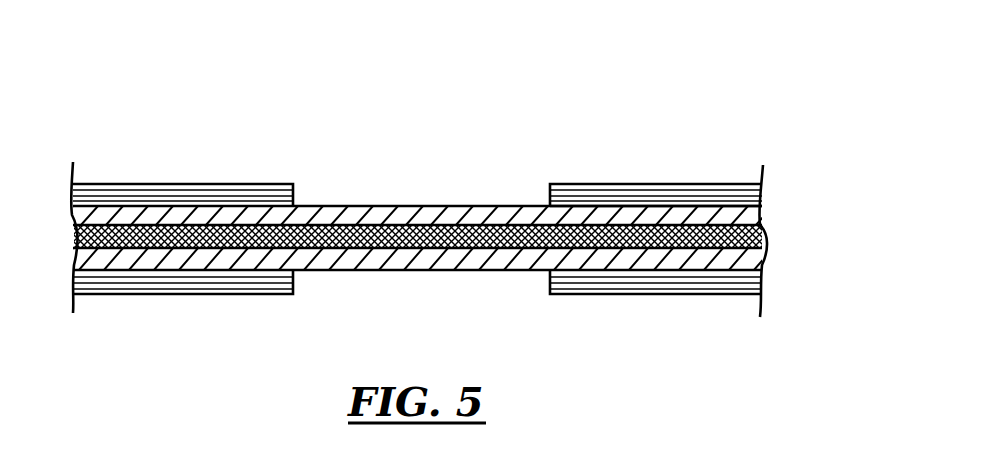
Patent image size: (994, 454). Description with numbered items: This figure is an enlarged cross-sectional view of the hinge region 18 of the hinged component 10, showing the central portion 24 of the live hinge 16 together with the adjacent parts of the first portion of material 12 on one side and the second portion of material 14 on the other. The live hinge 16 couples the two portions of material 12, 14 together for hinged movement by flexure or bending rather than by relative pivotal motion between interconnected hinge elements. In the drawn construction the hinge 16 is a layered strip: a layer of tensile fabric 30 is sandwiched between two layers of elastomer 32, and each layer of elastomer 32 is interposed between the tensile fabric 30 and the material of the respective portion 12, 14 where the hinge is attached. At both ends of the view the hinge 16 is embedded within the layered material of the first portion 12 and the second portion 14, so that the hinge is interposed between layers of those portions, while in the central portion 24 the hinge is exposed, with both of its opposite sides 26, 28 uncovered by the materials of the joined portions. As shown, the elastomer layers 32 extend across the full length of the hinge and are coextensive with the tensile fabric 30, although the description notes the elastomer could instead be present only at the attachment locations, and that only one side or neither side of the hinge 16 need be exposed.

The hinged component 10 is at (137, 99).
The first portion of material 12 is at (93, 190).
The second portion of material 14 is at (745, 188).
The live hinge 16 is at (647, 217).
The hinge region 18 is at (693, 107).
The central portion 24 is at (537, 270).
The first side of the hinge 26 is at (348, 207).
The second side of the hinge 28 is at (338, 272).
The layer of tensile fabric 30 is at (757, 240).
The layer of elastomer 32 is at (480, 262).